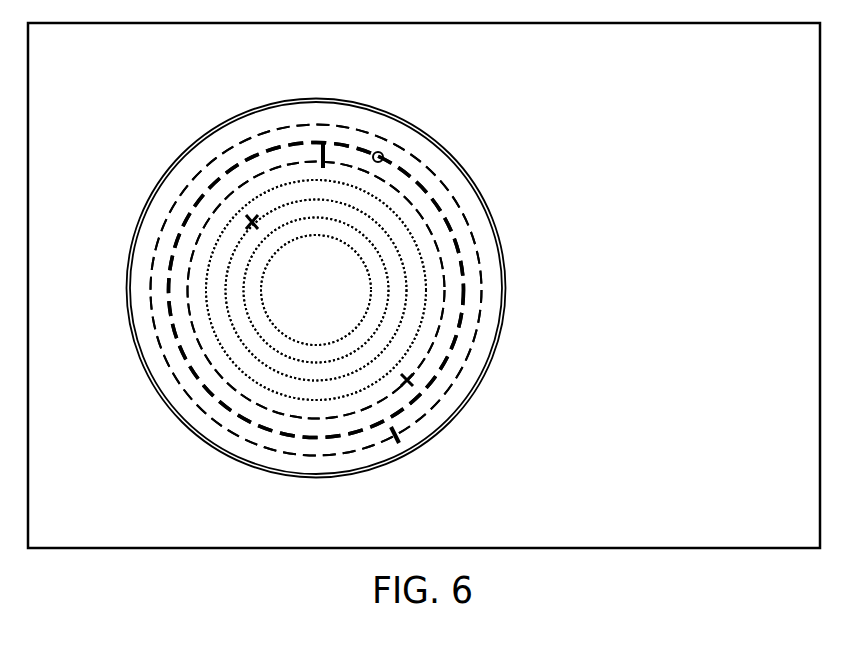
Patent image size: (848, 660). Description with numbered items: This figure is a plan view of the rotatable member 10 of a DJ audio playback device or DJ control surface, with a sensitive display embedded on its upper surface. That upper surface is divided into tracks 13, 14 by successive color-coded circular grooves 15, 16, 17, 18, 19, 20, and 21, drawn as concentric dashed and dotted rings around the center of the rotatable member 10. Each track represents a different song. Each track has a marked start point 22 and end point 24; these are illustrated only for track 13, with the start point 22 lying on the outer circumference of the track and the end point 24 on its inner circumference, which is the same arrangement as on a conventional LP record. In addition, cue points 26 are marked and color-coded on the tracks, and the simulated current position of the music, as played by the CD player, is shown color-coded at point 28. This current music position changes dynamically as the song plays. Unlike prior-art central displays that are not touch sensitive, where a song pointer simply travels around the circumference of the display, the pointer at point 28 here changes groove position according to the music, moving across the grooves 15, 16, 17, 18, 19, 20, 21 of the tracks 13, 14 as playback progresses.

The rotatable member 10 is at (232, 104).
The track 13 is at (187, 397).
The track 14 is at (300, 397).
The circular groove 15 is at (446, 172).
The circular groove 16 is at (440, 215).
The circular groove 17 is at (437, 258).
The circular groove 18 is at (430, 295).
The circular groove 19 is at (410, 302).
The circular groove 20 is at (382, 327).
The circular groove 21 is at (350, 338).
The start point 22 is at (397, 443).
The end point 24 is at (323, 142).
The cue points 26 is at (252, 216).
The current music position point 28 is at (380, 152).